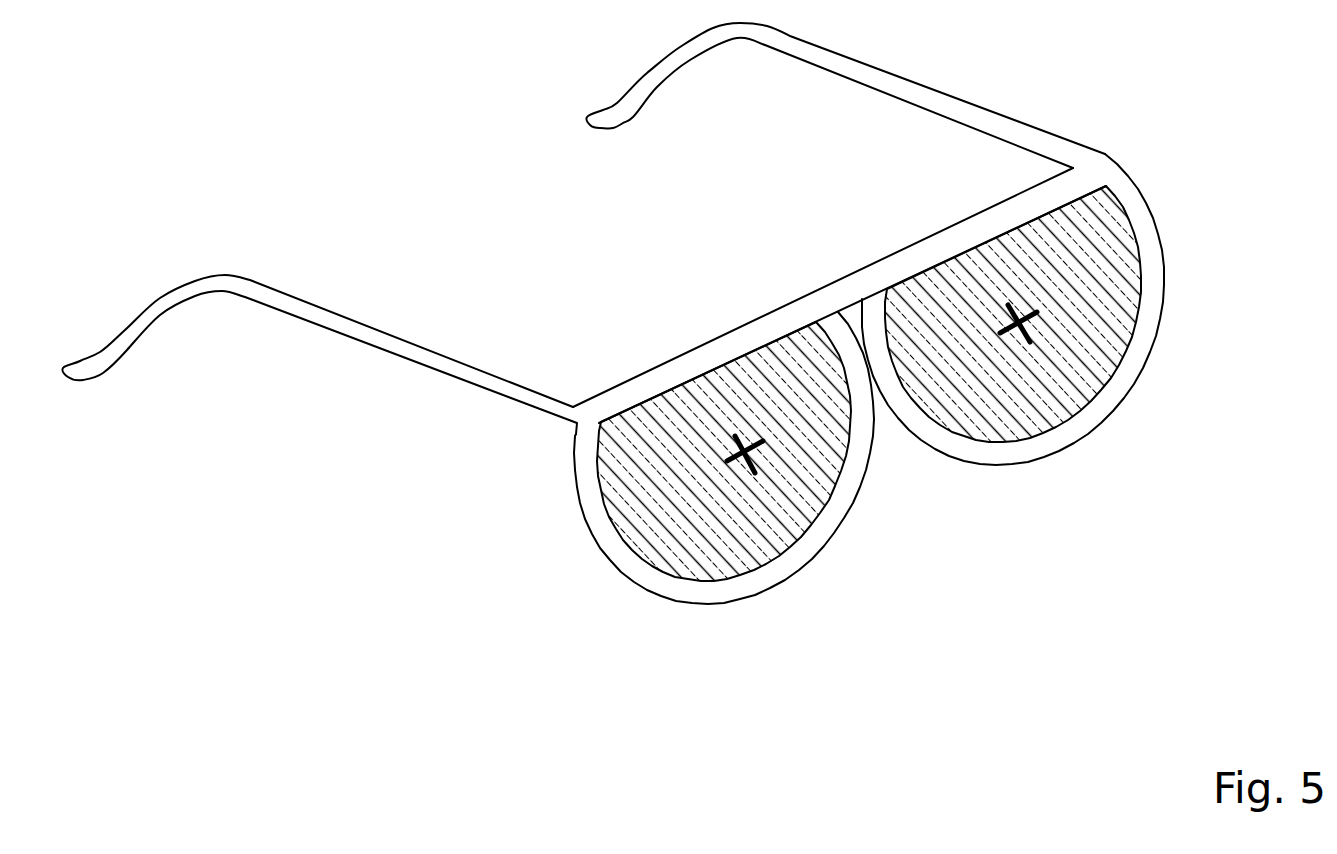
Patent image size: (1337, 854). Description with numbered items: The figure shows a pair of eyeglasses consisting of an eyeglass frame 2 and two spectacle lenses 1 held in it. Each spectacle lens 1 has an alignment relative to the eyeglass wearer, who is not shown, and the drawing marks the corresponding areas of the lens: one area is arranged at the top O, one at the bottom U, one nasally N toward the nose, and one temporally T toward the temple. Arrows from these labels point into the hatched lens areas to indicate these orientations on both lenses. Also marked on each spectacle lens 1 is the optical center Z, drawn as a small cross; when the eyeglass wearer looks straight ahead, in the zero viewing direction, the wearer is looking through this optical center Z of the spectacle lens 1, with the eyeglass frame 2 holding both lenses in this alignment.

The spectacle lens 1 is at (782, 522).
The eyeglass frame 2 is at (385, 338).
The top O is at (957, 287).
The bottom U is at (1052, 403).
The nasal area N is at (932, 373).
The temporal area T is at (1107, 260).
The optical center Z is at (1040, 330).